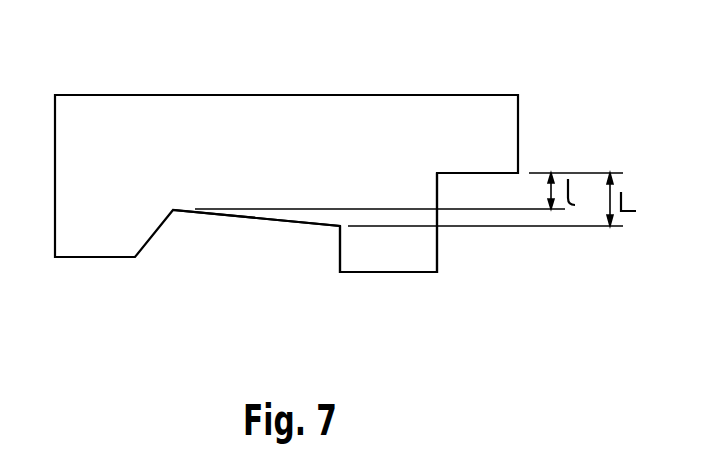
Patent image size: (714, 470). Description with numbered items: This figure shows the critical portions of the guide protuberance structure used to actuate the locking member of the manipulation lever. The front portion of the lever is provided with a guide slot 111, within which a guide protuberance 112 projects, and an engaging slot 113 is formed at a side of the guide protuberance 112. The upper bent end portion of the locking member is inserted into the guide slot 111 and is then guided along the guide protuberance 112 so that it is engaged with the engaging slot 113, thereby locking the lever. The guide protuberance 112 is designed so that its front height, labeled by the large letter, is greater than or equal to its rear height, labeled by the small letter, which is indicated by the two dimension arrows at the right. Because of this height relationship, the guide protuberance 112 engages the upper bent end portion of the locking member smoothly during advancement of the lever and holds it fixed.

The guide slot 111 is at (423, 117).
The guide protuberance 112 is at (265, 220).
The engaging slot 113 is at (403, 260).